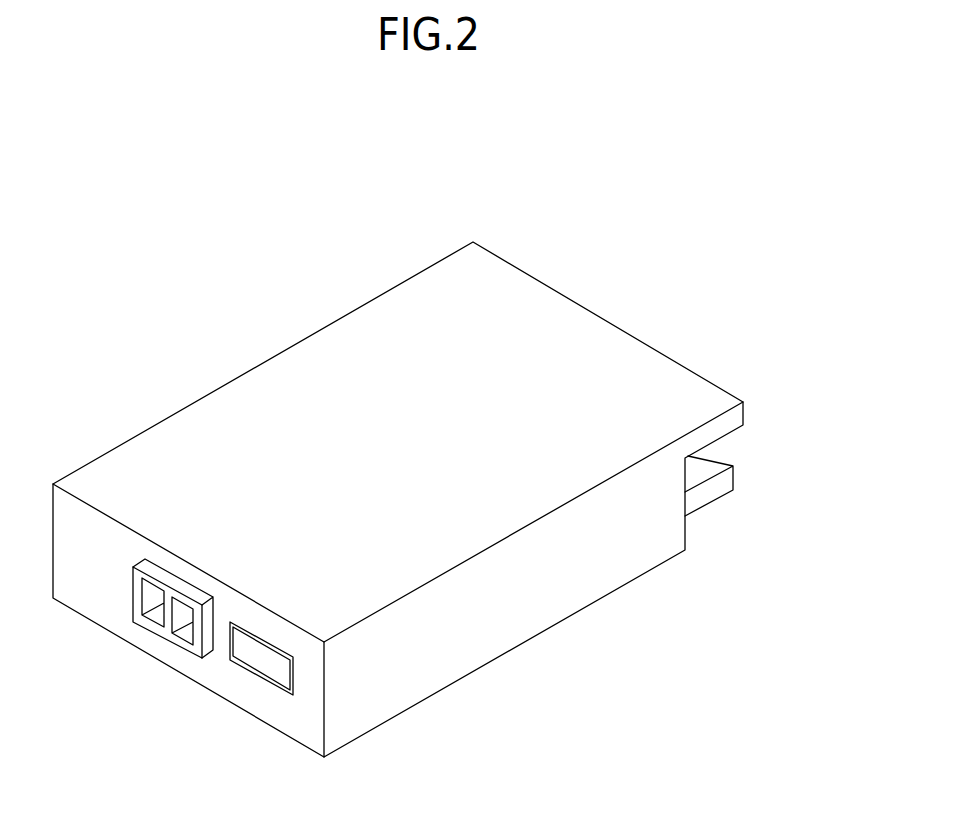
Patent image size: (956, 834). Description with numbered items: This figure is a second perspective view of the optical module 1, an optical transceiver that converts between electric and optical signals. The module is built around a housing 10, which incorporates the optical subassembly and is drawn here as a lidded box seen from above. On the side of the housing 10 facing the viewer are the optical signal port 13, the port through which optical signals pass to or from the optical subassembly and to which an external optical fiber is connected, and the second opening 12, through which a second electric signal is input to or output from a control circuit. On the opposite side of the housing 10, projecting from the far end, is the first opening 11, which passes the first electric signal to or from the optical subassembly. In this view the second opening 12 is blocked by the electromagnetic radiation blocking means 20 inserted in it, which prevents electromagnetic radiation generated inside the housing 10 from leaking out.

The optical module 1 is at (232, 247).
The housing 10 is at (362, 318).
The first opening 11 is at (745, 452).
The second opening 12 is at (242, 675).
The optical signal port 13 is at (168, 632).
The electromagnetic radiation blocking means 20 is at (260, 657).